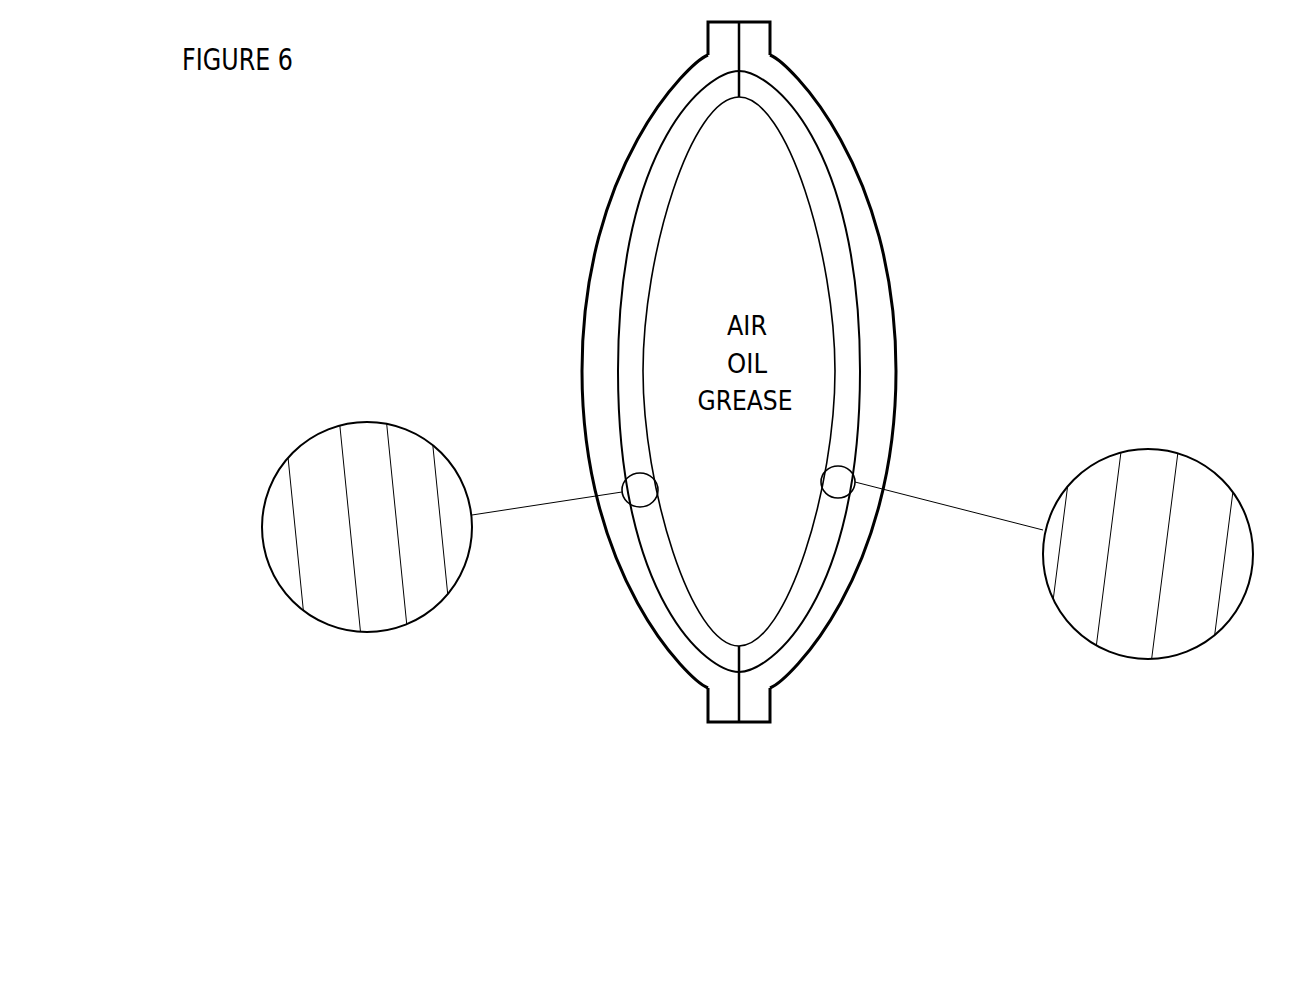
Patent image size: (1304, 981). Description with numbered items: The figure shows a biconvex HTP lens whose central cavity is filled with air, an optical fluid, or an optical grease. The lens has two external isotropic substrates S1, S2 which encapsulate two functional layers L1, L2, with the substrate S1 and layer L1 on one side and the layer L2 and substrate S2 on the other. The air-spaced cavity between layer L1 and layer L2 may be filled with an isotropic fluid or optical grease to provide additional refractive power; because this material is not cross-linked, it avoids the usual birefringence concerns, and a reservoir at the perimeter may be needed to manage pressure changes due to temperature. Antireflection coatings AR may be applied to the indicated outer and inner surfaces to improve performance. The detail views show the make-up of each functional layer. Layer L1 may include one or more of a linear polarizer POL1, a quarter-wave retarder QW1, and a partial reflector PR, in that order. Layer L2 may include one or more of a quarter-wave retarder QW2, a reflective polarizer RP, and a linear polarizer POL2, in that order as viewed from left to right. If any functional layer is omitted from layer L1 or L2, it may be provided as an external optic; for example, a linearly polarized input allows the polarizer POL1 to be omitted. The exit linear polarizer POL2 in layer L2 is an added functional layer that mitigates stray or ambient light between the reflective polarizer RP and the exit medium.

The external isotropic substrate S1 is at (645, 371).
The Layer 1 L1 is at (678, 371).
The Layer 2 L2 is at (799, 371).
The external isotropic substrate S2 is at (833, 371).
The antireflection coating AR is at (882, 235).
The linear polarizer POL1 is at (311, 527).
The quarter-wave retarder QW1 is at (362, 527).
The partial reflector PR is at (419, 527).
The quarter-wave retarder QW2 is at (1083, 554).
The reflective polarizer RP is at (1151, 554).
The linear polarizer POL2 is at (1206, 554).